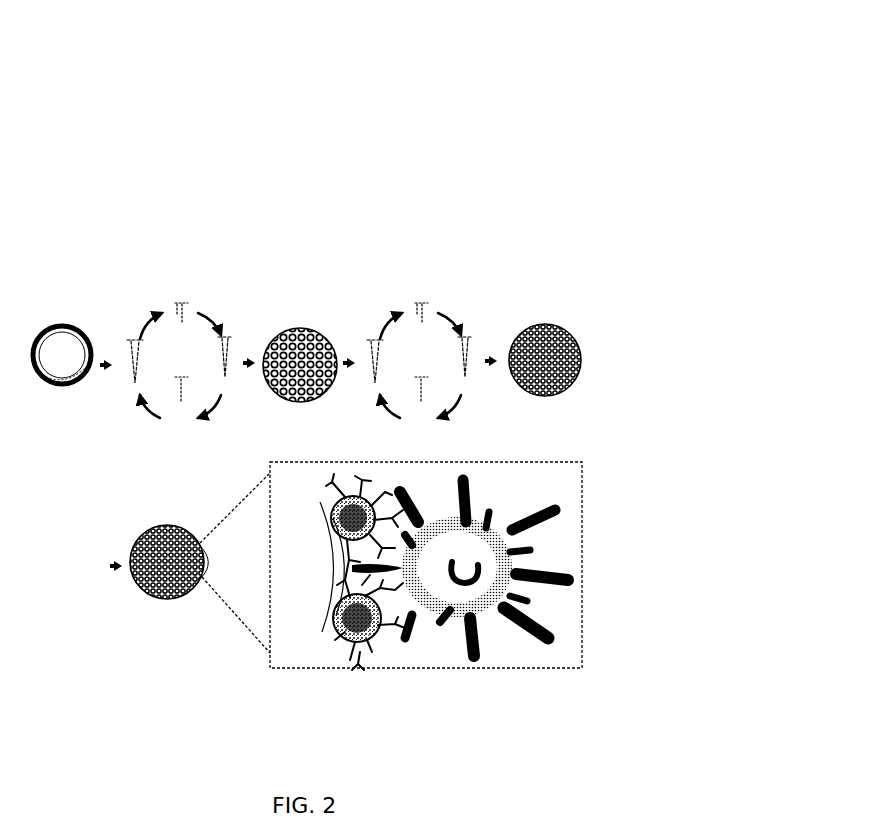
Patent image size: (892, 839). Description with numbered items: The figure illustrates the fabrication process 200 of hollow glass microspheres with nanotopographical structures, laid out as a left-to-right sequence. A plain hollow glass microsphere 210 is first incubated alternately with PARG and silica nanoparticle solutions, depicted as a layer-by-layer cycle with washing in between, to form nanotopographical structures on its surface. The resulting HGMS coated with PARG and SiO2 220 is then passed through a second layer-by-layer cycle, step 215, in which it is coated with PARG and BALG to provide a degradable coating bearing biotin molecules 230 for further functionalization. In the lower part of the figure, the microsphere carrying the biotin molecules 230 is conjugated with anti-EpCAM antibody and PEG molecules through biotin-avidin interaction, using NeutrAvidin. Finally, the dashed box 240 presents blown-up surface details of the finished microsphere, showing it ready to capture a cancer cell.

The fabrication process of hollow glass microspheres with nanotopographical structur 200 is at (300, 98).
The hollow glass microsphere 210 is at (57, 326).
The PARG and BALG coating step 215 is at (180, 264).
The HGMS coated with PARG and SiO2 220 is at (302, 323).
The biotin molecules 230 is at (550, 323).
The box 240 is at (517, 663).